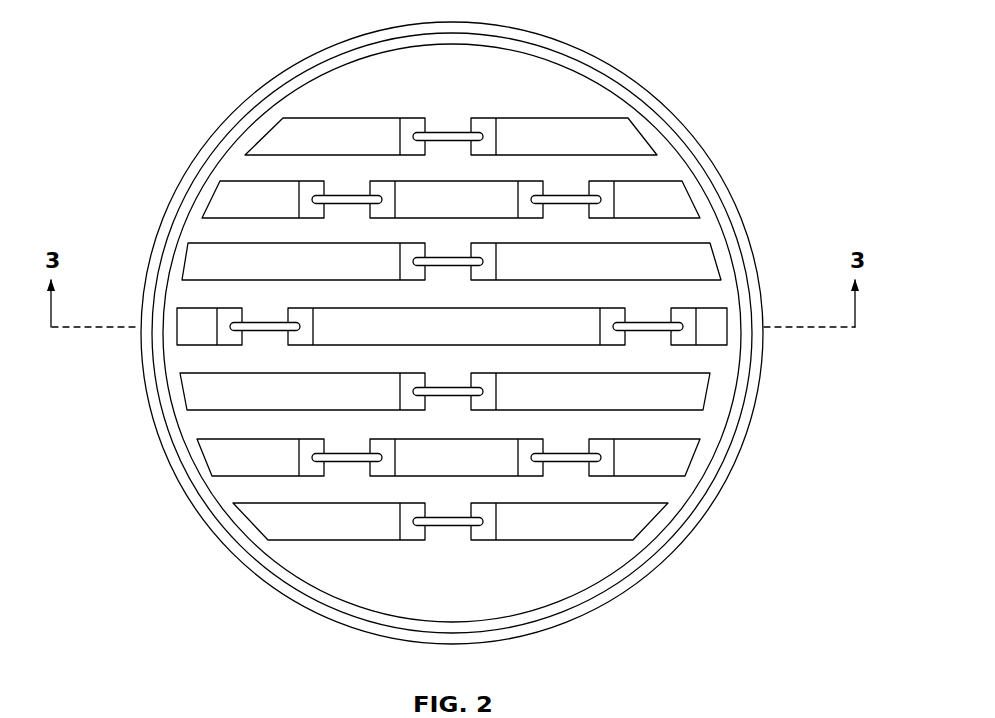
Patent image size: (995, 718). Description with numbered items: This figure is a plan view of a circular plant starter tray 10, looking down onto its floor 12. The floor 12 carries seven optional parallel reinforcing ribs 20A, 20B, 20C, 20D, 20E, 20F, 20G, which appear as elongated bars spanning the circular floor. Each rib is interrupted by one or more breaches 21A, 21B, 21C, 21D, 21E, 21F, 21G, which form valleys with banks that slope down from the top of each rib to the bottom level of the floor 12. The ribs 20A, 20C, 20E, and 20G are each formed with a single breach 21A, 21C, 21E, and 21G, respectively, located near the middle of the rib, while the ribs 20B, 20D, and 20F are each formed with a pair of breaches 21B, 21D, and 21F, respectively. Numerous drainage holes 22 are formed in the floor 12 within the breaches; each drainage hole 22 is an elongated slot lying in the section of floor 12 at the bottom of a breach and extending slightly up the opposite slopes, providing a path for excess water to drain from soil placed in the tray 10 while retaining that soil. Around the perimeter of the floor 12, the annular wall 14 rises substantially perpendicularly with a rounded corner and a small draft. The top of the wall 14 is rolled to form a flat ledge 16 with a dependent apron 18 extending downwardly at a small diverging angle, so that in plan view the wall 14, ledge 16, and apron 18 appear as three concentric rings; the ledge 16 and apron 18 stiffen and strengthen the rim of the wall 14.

The plant starter tray 10 is at (128, 42).
The floor 12 is at (442, 380).
The annular wall 14 is at (212, 488).
The ledge 16 is at (745, 387).
The apron 18 is at (740, 462).
The reinforcing rib 20A is at (290, 125).
The reinforcing rib 20B is at (223, 203).
The reinforcing rib 20C is at (190, 267).
The reinforcing rib 20D is at (187, 320).
The reinforcing rib 20E is at (190, 387).
The reinforcing rib 20F is at (220, 462).
The reinforcing rib 20G is at (268, 522).
The breach 21A is at (437, 119).
The breach 21B is at (343, 187).
The breach 21C is at (460, 245).
The breach 21D is at (656, 344).
The breach 21E is at (457, 404).
The breach 21F is at (580, 476).
The breach 21G is at (445, 538).
The drainage hole 22 is at (480, 333).